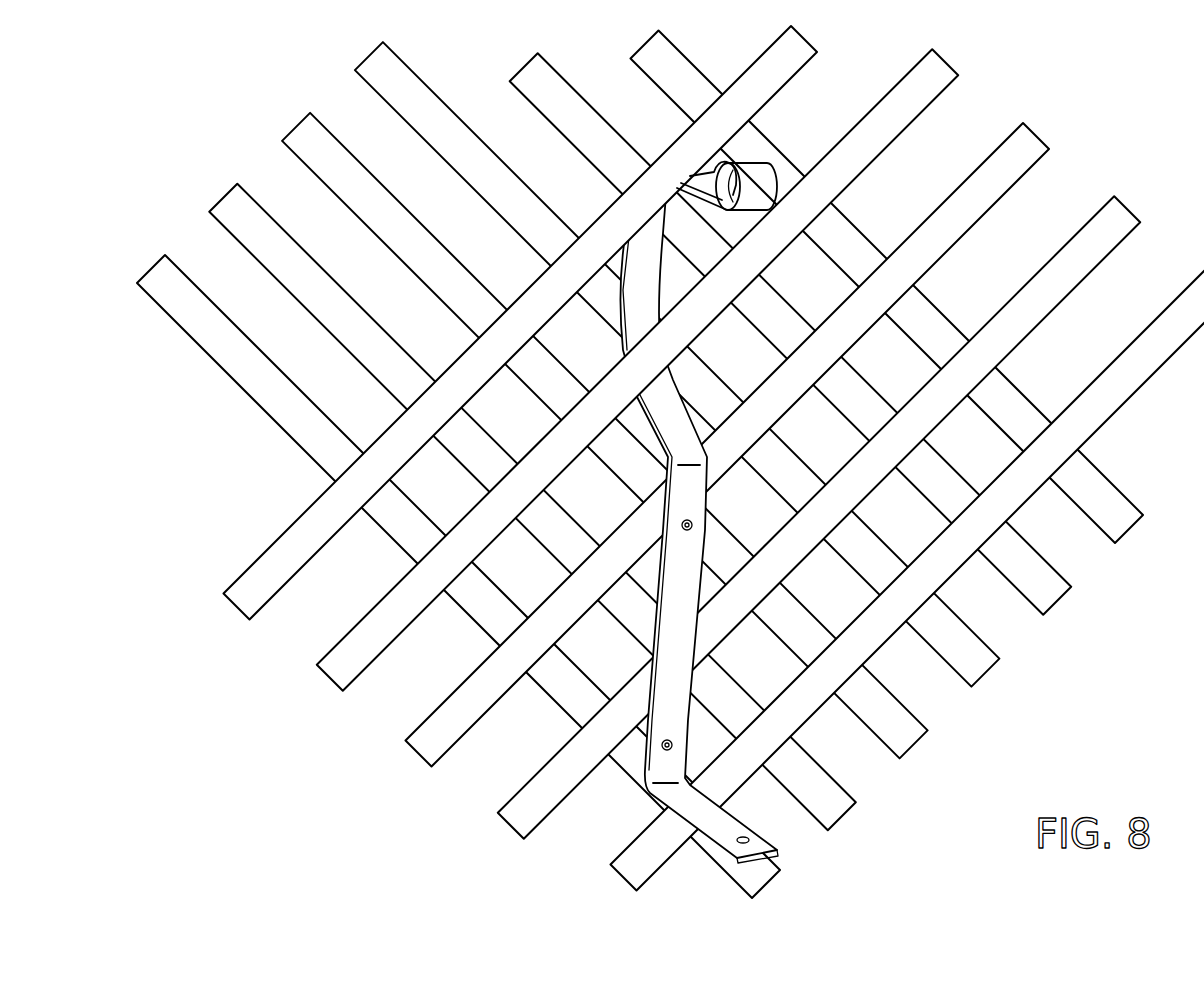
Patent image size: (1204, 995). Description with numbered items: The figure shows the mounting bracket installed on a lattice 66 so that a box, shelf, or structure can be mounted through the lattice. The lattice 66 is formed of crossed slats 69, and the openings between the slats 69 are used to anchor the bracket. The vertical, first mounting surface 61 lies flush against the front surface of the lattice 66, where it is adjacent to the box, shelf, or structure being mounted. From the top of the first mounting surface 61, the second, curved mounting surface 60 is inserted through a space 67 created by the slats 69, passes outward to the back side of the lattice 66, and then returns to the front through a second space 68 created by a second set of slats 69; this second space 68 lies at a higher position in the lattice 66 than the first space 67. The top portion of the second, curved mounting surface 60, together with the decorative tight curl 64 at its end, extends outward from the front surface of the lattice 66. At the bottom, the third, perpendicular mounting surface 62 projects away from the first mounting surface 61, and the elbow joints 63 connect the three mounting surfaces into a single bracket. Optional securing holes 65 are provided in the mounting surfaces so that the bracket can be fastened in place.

The second, curved mounting surface 60 is at (652, 547).
The first mounting surface 61 is at (682, 623).
The third, perpendicular mounting surface 62 is at (673, 792).
The elbow joints 63 is at (660, 458).
The decorative tight curl 64 is at (765, 188).
The securing holes 65 is at (681, 524).
The lattice 66 is at (656, 465).
The space 67 is at (662, 393).
The second space 68 is at (693, 180).
The slats 69 is at (293, 130).